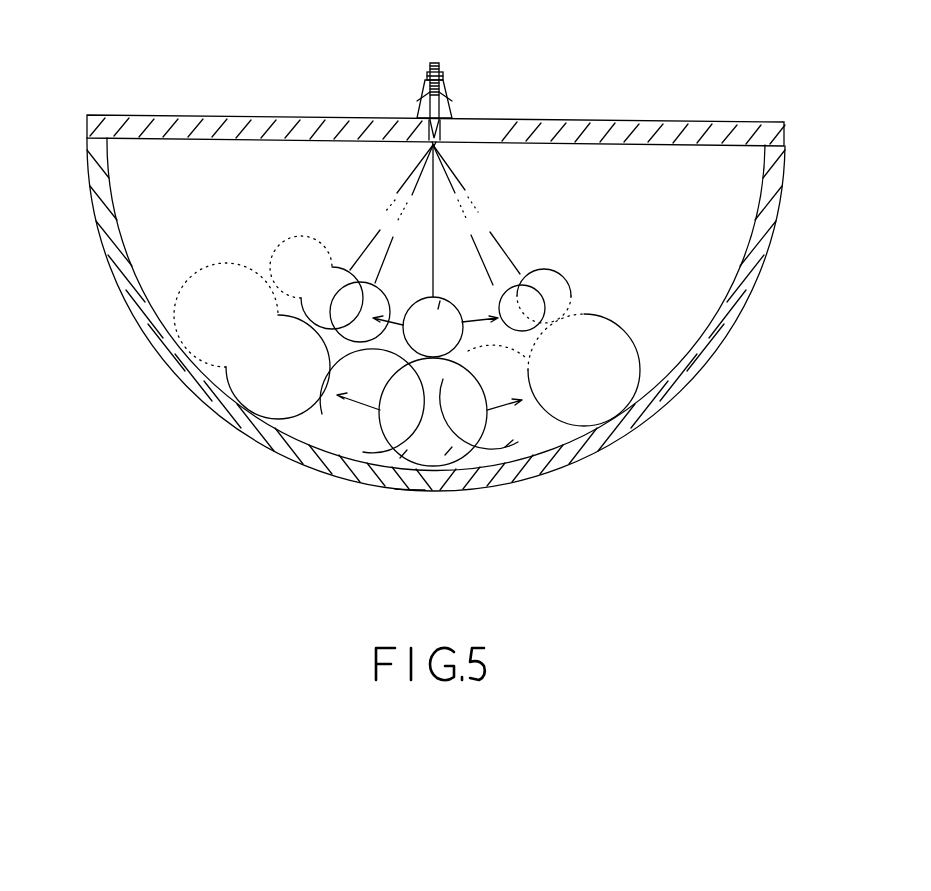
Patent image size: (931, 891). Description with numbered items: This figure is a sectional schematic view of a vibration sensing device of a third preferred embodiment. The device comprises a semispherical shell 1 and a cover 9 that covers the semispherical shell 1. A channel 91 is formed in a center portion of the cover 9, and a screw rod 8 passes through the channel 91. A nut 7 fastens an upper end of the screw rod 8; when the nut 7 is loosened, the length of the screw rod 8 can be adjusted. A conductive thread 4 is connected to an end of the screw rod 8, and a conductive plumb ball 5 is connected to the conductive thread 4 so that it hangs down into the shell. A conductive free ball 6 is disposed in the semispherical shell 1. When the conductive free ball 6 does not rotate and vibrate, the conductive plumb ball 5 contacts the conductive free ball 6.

The semispherical shell 1 is at (741, 298).
The cover 9 is at (626, 130).
The channel 91 is at (424, 134).
The screw rod 8 is at (432, 63).
The nut 7 is at (444, 76).
The conductive thread 4 is at (435, 248).
The conductive plumb ball 5 is at (453, 296).
The conductive free ball 6 is at (405, 491).